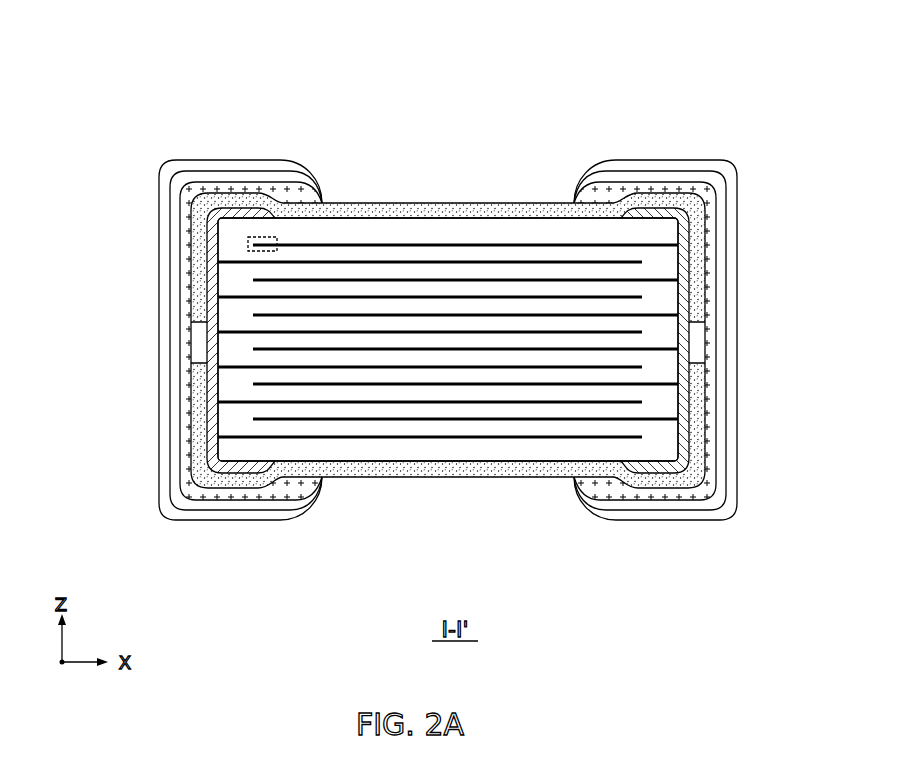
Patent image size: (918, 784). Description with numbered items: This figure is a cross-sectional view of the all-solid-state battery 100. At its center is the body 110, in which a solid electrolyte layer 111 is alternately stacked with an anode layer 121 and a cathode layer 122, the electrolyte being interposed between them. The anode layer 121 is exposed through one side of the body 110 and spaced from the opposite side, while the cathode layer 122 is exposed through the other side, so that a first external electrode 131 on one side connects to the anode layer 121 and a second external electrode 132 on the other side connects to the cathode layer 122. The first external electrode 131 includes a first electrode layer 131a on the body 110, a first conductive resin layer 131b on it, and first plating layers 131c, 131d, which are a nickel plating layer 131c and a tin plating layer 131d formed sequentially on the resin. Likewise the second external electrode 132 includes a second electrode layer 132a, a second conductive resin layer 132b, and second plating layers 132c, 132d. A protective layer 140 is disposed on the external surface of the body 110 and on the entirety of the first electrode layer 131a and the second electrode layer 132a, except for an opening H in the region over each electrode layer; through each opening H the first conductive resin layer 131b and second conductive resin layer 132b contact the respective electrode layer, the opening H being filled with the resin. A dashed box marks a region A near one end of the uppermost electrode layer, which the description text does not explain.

The all-solid-state battery 100 is at (297, 49).
The body 110 is at (520, 215).
The solid electrolyte layer 111 is at (468, 255).
The anode layer 121 is at (363, 258).
The cathode layer 122 is at (403, 243).
The first external electrode 131 is at (223, 378).
The first electrode layer 131a is at (212, 380).
The first conductive resin layer 131b is at (202, 494).
The first Ni plating layer 131c is at (246, 505).
The first Sn plating layer 131d is at (252, 362).
The second external electrode 132 is at (674, 378).
The second electrode layer 132a is at (683, 383).
The second conductive resin layer 132b is at (693, 494).
The second Ni plating layer 132c is at (650, 505).
The second Sn plating layer 132d is at (644, 362).
The protective layer 140 is at (233, 204).
The enlarged region A is at (272, 236).
The opening H is at (198, 334).